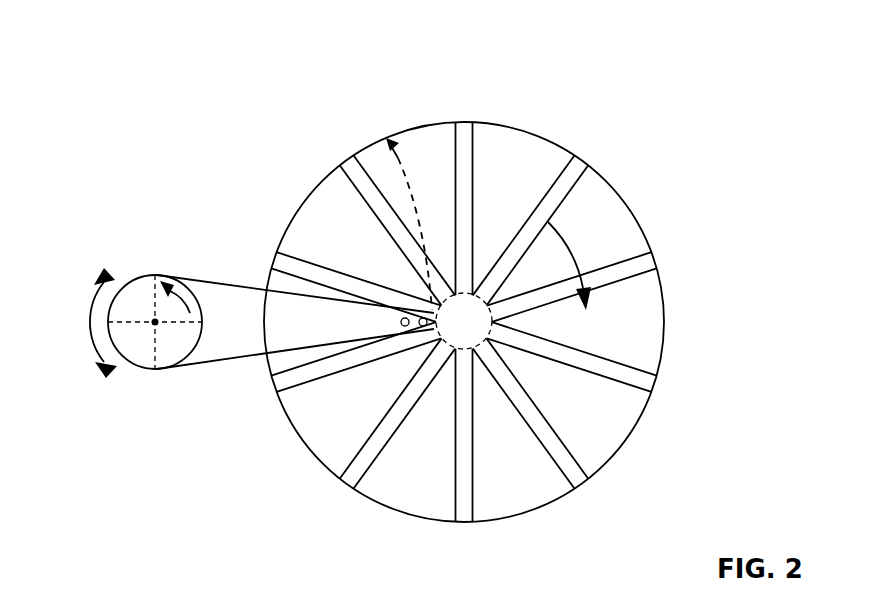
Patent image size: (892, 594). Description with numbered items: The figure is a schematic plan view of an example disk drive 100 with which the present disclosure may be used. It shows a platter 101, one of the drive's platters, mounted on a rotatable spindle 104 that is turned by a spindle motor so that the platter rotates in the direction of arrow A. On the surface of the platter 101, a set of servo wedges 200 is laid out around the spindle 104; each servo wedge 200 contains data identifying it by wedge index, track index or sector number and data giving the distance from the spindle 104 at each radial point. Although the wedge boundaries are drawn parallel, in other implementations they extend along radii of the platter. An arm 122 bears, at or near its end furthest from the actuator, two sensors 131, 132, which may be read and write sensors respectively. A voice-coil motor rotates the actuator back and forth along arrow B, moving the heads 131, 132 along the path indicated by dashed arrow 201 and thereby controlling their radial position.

The disk drive 100 is at (131, 76).
The platter 101 is at (397, 132).
The spindle 104 is at (474, 288).
The servo wedge 200 is at (463, 135).
The dashed arrow 201 is at (408, 183).
The arm 122 is at (188, 278).
The sensor 131 is at (422, 327).
The sensor 132 is at (406, 327).